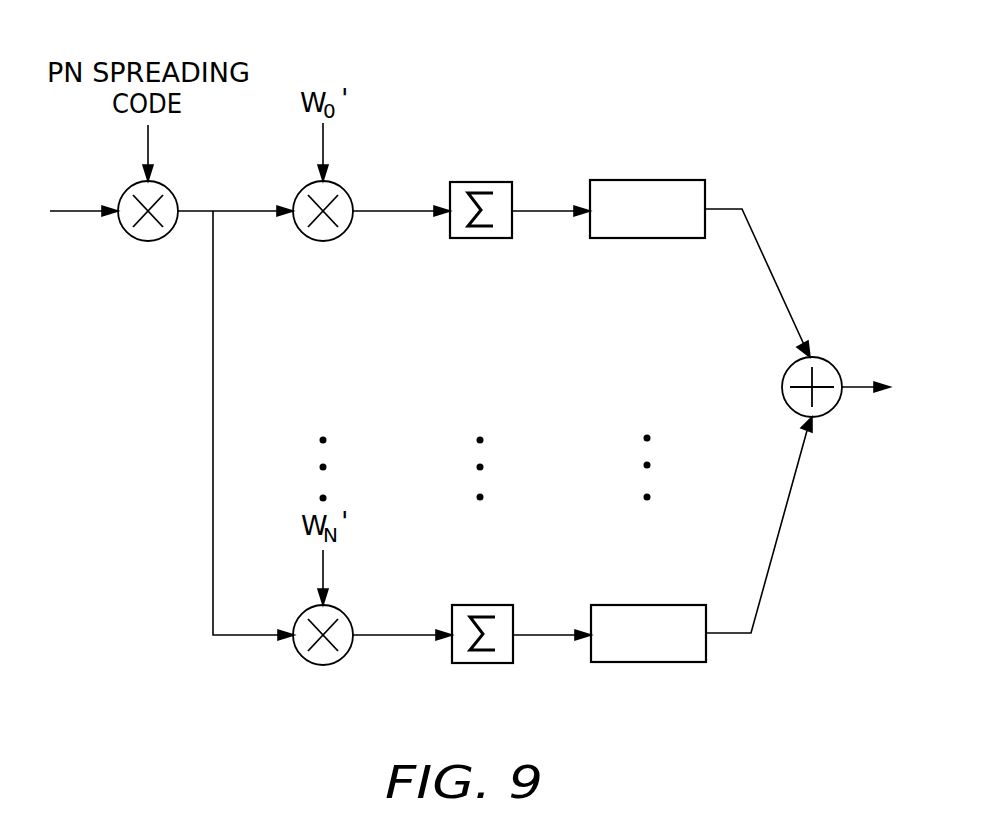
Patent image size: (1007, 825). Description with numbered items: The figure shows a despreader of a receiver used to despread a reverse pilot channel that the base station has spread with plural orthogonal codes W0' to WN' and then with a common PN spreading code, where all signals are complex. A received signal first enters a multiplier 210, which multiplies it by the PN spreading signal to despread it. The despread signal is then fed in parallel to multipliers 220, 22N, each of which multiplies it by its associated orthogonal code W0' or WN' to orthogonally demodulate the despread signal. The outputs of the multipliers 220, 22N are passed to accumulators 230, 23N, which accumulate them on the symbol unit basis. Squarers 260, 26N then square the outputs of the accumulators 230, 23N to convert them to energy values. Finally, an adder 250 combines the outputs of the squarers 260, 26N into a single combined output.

The multiplier 210 is at (172, 193).
The multiplier 220 is at (323, 242).
The multiplier 22N is at (323, 665).
The accumulator 230 is at (477, 182).
The accumulator 23N is at (487, 605).
The squarer 260 is at (652, 180).
The squarer 26N is at (658, 605).
The adder 250 is at (835, 367).